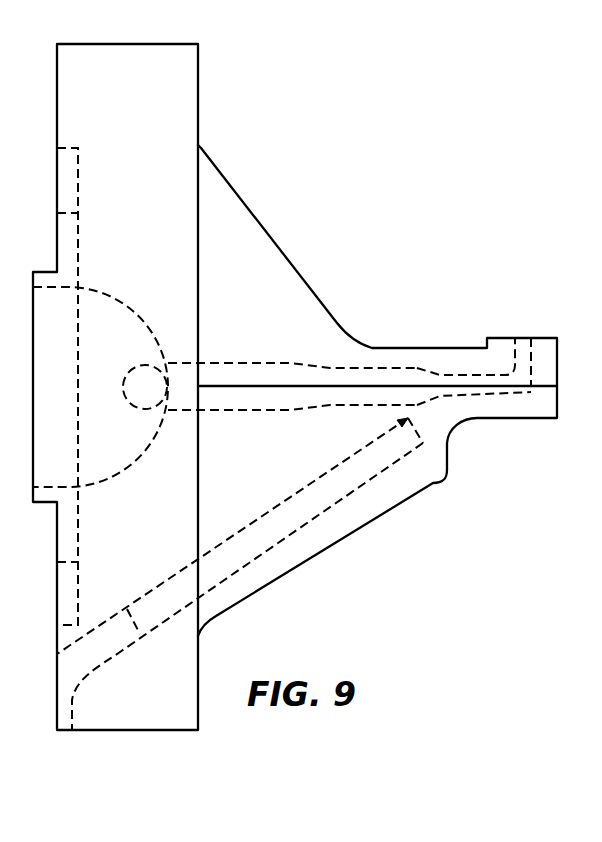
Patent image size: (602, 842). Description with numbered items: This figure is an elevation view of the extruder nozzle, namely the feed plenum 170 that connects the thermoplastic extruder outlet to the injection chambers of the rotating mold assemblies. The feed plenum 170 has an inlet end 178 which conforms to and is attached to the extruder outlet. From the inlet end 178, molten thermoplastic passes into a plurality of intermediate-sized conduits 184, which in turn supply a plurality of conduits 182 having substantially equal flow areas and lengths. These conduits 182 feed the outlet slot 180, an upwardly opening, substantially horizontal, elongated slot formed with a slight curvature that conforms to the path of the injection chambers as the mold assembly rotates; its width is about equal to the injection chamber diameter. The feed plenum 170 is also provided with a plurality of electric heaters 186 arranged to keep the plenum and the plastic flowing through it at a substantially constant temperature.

The feed plenum 170 is at (159, 532).
The inlet end 178 is at (129, 356).
The outlet slot 180 is at (530, 337).
The conduits 182 is at (447, 372).
The intermediate-sized conduits 184 is at (371, 366).
The electric heaters 186 is at (335, 504).